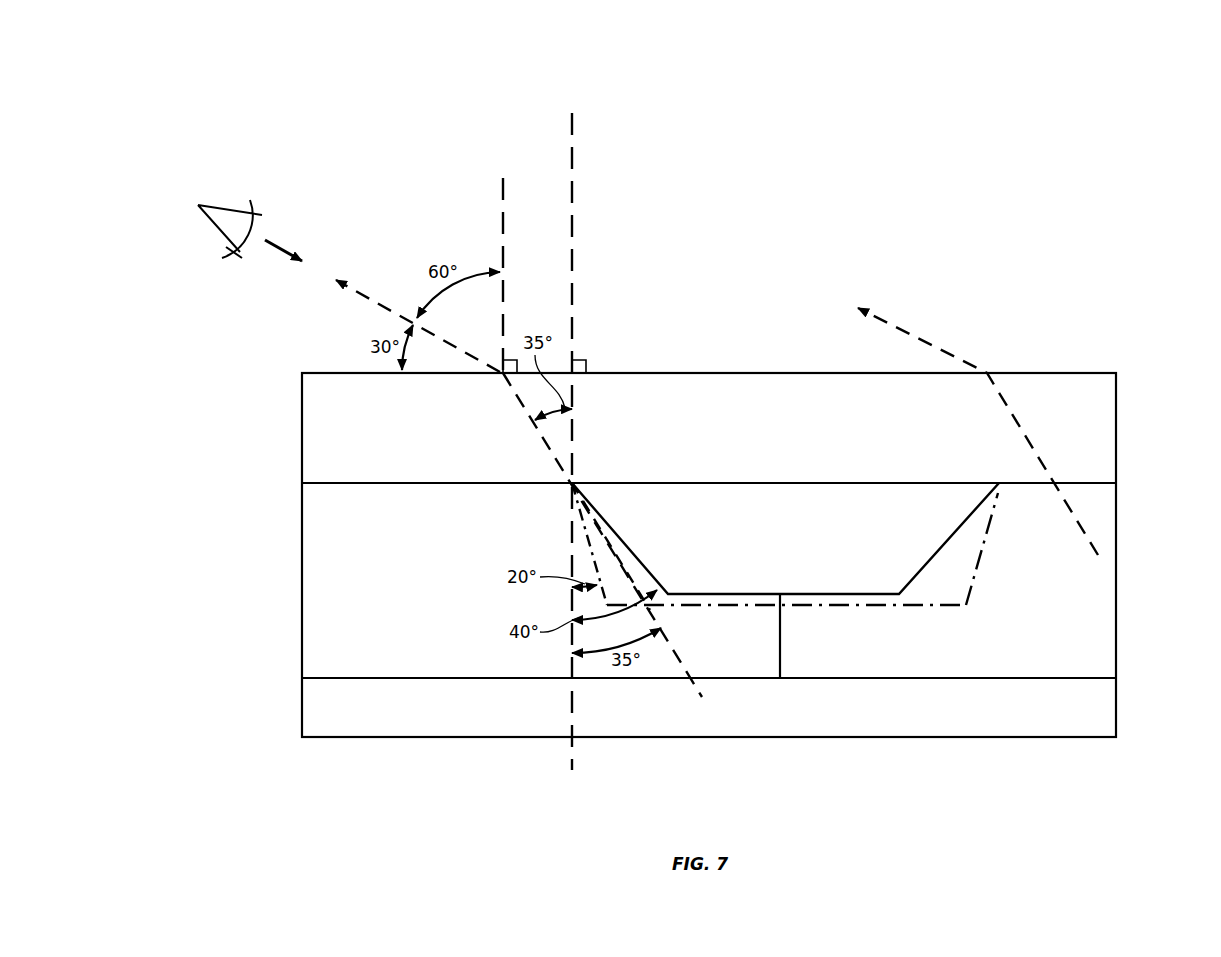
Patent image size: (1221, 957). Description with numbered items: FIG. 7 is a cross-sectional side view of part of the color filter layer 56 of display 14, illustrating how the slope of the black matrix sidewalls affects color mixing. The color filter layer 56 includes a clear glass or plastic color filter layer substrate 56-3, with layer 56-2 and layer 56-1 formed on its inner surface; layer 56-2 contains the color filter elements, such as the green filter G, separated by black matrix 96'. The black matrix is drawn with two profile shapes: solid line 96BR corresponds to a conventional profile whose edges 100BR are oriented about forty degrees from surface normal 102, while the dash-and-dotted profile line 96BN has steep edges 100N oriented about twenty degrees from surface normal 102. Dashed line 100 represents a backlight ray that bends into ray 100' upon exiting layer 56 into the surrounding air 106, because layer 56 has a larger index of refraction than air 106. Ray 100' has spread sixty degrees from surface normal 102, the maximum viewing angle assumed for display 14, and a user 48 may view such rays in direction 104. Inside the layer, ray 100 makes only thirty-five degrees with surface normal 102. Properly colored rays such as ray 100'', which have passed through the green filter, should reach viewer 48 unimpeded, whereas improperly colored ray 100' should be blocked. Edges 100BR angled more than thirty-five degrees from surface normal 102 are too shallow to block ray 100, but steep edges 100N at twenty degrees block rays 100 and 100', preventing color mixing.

The display 14 is at (1048, 181).
The user 48 is at (222, 206).
The color filter layer 56 is at (272, 373).
The layer 56-1 is at (1110, 703).
The layer containing color filter elements 56-2 is at (1125, 483).
The color filter layer substrate 56-3 is at (1110, 420).
The black matrix 96' is at (785, 515).
The black matrix profile line 96BN is at (972, 578).
The conventional black matrix profile line 96BR is at (856, 597).
The ray of backlight 100 is at (620, 535).
The exiting ray 100' is at (418, 307).
The properly colored ray 100'' is at (978, 417).
The conventional black matrix edge 100BR is at (636, 570).
The steep black matrix edge 100N is at (587, 538).
The surface normal 102 is at (572, 200).
The viewing direction 104 is at (288, 254).
The air 106 is at (823, 209).